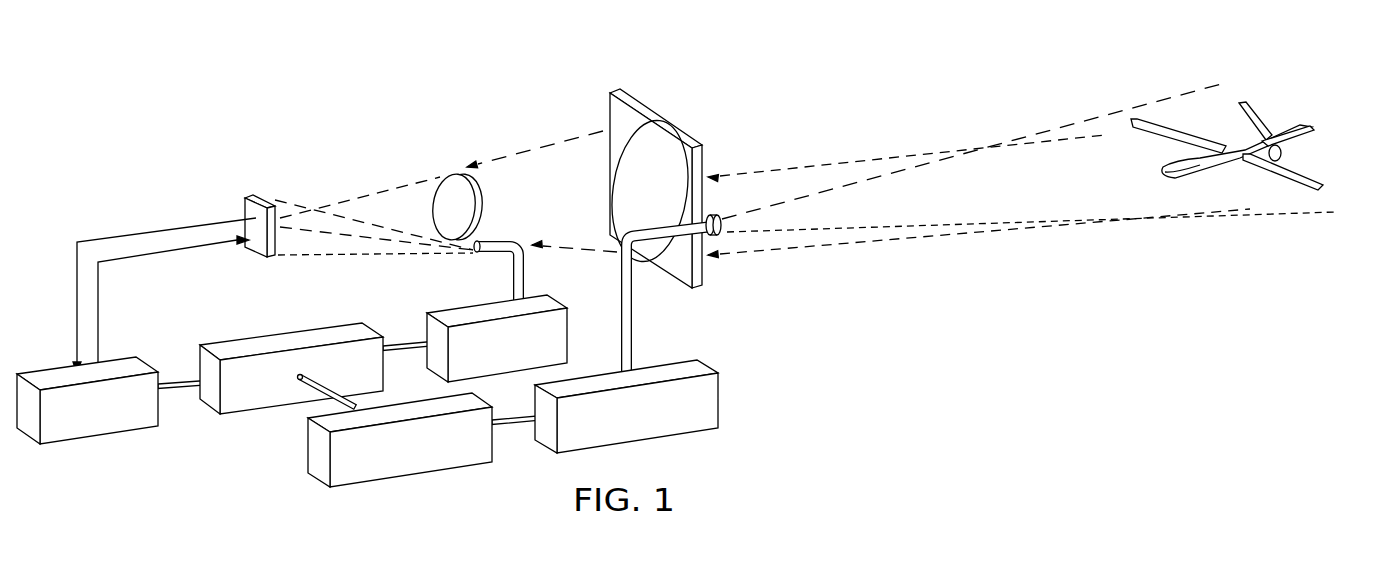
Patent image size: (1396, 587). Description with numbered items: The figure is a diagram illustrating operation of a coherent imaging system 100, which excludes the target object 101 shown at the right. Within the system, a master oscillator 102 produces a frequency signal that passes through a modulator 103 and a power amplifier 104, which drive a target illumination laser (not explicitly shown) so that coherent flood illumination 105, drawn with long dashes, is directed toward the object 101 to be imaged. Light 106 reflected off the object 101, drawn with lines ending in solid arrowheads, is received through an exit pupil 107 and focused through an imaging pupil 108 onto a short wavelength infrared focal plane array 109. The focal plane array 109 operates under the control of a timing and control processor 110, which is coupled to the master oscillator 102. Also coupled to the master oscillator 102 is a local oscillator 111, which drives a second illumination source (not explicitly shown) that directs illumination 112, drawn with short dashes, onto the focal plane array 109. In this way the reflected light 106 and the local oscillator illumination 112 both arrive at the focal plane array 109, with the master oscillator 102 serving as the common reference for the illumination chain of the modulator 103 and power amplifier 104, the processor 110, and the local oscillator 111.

The coherent imaging system 100 is at (500, 104).
The target object 101 is at (1322, 150).
The master oscillator 102 is at (238, 347).
The modulator 103 is at (419, 462).
The power amplifier 104 is at (645, 428).
The coherent flood illumination 105 is at (1102, 117).
The reflected light 106 is at (837, 163).
The exit pupil 107 is at (655, 118).
The imaging pupil 108 is at (452, 173).
The short wavelength infrared focal plane array 109 is at (252, 197).
The timing and control processor 110 is at (55, 367).
The local oscillator 111 is at (465, 313).
The local oscillator illumination 112 is at (297, 204).